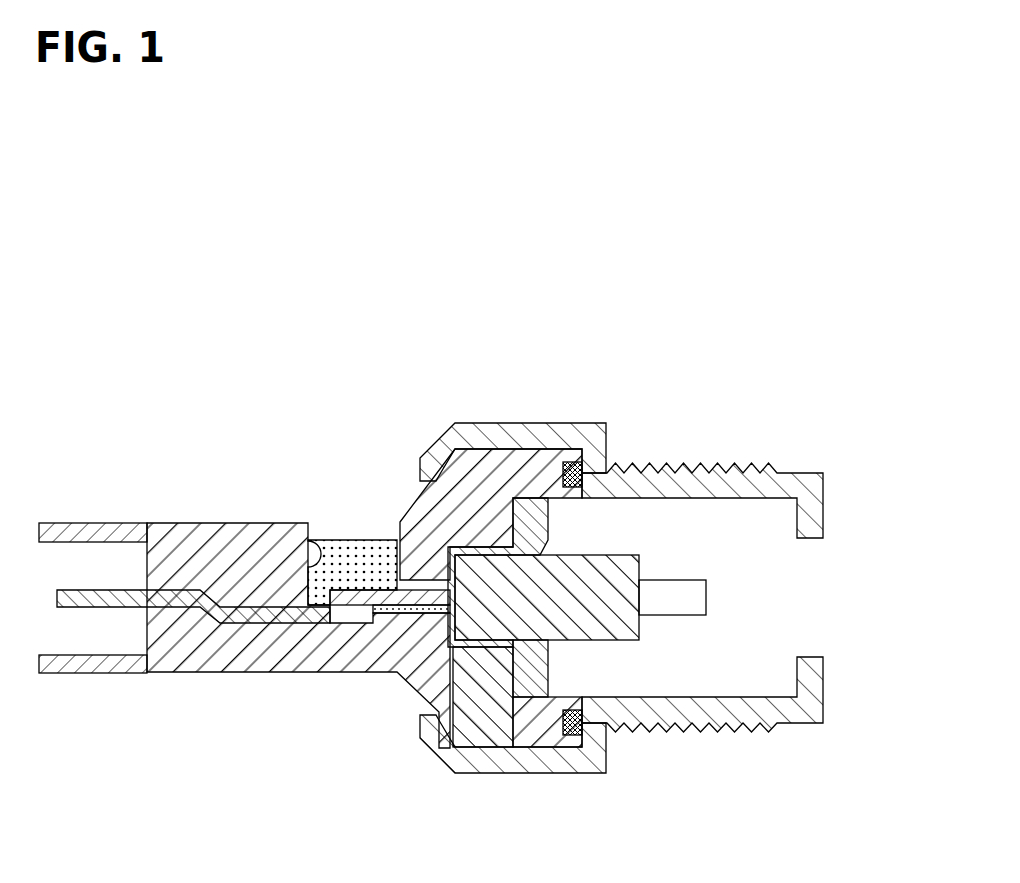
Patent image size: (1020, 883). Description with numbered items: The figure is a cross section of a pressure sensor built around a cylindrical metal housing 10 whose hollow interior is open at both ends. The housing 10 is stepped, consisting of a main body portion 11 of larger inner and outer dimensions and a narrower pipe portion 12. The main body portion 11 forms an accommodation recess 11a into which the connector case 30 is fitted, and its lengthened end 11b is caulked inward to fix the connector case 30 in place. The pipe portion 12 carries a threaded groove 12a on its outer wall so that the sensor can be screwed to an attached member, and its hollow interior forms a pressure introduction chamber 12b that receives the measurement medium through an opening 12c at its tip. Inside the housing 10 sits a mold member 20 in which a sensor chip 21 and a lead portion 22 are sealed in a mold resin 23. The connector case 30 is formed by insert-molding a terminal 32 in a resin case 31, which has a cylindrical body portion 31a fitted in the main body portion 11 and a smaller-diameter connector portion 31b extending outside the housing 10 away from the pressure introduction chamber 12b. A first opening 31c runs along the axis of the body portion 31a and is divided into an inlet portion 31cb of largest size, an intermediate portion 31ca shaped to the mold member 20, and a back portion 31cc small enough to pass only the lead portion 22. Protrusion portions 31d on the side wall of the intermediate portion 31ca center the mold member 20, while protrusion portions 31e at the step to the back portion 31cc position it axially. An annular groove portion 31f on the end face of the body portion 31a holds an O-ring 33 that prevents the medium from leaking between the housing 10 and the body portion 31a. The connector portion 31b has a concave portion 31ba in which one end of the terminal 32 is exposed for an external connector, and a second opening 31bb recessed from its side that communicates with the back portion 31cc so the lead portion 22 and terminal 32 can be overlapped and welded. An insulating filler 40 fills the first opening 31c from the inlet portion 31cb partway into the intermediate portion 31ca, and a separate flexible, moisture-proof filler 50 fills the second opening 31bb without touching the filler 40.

The housing 10 is at (437, 603).
The main body portion 11 is at (522, 422).
The accommodation recess 11a is at (490, 455).
The one end of the main body portion 11b is at (428, 450).
The pipe portion 12 is at (824, 486).
The threaded groove 12a is at (775, 466).
The pressure introduction chamber 12b is at (742, 657).
The opening 12c is at (818, 540).
The mold member 20 is at (623, 615).
The sensor chip 21 is at (687, 597).
The lead portion 22 is at (343, 600).
The mold resin 23 is at (552, 743).
The connector case 30 is at (203, 521).
The resin case 31 is at (437, 603).
The body portion 31a is at (482, 747).
The connector portion 31b is at (193, 673).
The concave portion 31ba is at (127, 656).
The second opening 31bb is at (312, 545).
The first opening 31c is at (742, 342).
The intermediate portion 31ca is at (453, 613).
The inlet portion 31cb is at (550, 520).
The back portion 31cc is at (470, 605).
The protrusion portion 31d is at (453, 743).
The protrusion portion 31e is at (417, 655).
The groove portion 31f is at (567, 722).
The terminal 32 is at (92, 591).
The O-ring 33 is at (582, 745).
The filler 40 is at (537, 707).
The filler 50 is at (368, 545).